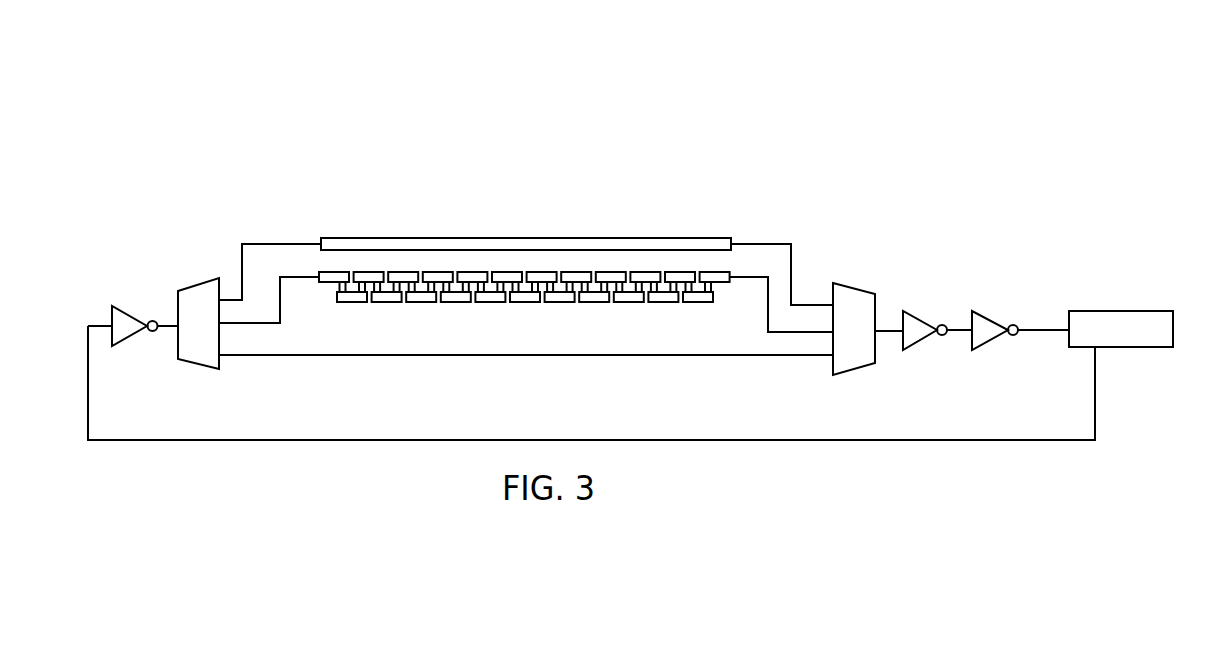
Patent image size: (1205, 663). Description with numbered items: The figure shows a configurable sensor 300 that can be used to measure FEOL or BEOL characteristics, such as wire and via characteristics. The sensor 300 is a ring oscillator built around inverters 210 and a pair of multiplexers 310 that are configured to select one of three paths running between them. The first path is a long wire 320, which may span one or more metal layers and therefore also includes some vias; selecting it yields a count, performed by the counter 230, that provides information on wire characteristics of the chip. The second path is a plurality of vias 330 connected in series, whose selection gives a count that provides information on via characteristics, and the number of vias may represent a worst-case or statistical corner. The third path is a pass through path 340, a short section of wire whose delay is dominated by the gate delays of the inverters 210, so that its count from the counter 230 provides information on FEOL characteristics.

The configurable sensor 300 is at (205, 106).
The inverters 210 is at (122, 305).
The multiplexers 310 is at (197, 283).
The long wire 320 is at (312, 238).
The vias 330 is at (737, 269).
The pass through path 340 is at (472, 362).
The counter 230 is at (1114, 310).